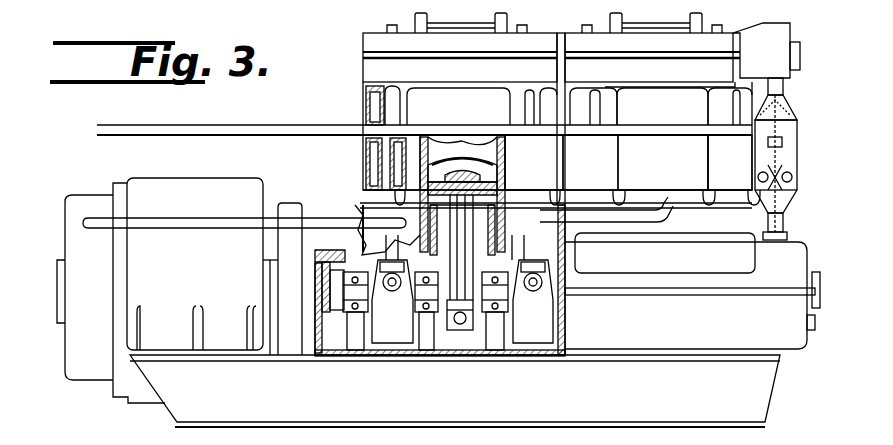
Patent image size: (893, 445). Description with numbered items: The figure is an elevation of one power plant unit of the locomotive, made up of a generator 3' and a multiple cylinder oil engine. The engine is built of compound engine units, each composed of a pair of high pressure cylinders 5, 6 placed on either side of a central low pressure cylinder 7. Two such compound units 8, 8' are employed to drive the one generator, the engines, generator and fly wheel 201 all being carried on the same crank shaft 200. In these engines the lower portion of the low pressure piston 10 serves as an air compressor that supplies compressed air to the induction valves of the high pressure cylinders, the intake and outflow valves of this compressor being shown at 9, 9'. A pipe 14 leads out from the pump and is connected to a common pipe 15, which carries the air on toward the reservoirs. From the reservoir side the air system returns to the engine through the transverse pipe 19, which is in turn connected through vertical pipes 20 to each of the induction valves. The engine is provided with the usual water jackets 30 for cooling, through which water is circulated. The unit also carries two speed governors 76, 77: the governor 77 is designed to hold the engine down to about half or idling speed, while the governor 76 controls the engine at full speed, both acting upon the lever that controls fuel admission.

The generator 3' is at (160, 290).
The high pressure cylinder 5 is at (368, 152).
The high pressure cylinder 6 is at (628, 162).
The low pressure cylinder 7 is at (580, 142).
The compound engine unit 8 is at (460, 52).
The compound engine unit 8' is at (682, 62).
The intake valve 9 is at (440, 194).
The outflow valve 9' is at (480, 230).
The low pressure piston 10 is at (499, 204).
The pipe 14 is at (621, 212).
The common pipe 15 is at (317, 223).
The transverse pipe 19 is at (231, 127).
The vertical pipe 20 is at (392, 88).
The water jacket 30 is at (372, 88).
The speed governor 76 is at (785, 118).
The speed governor 77 is at (788, 174).
The crank shaft 200 is at (312, 298).
The fly wheel 201 is at (290, 206).